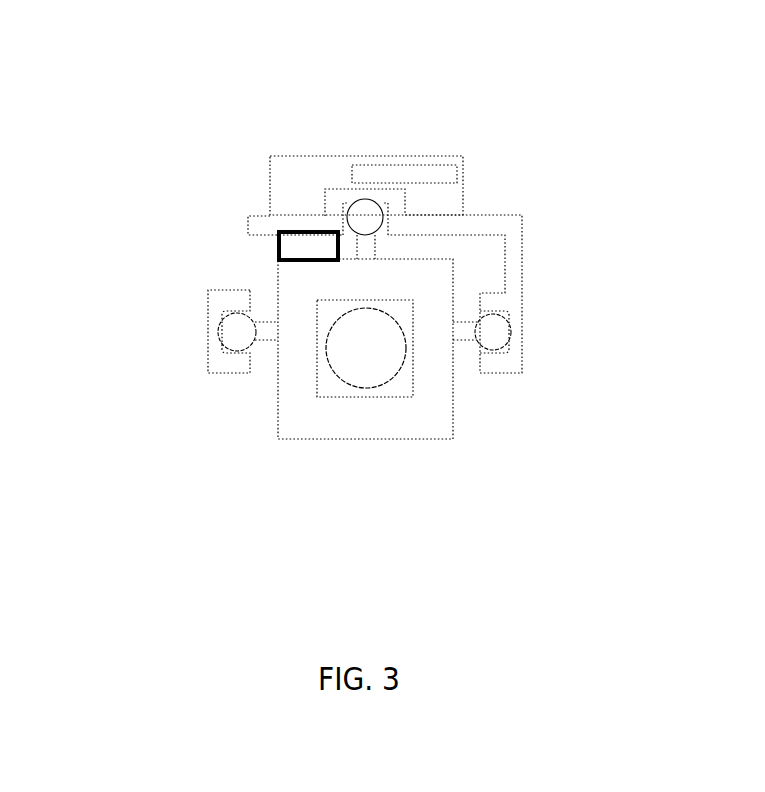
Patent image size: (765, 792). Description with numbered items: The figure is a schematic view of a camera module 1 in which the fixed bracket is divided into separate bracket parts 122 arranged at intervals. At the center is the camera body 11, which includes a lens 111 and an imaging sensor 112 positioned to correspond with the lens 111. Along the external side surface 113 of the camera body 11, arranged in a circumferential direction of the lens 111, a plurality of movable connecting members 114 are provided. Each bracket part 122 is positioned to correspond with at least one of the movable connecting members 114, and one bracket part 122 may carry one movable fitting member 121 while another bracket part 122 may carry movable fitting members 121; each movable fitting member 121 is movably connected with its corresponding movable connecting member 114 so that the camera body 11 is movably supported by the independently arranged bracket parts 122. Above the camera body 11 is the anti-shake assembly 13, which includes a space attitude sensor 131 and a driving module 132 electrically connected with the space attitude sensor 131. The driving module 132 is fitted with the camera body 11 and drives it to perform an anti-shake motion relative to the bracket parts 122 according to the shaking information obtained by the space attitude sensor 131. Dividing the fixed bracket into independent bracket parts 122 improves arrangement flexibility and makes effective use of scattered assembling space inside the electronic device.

The camera module 1 is at (202, 102).
The camera body 11 is at (298, 390).
The lens 111 is at (352, 362).
The imaging sensor 112 is at (337, 397).
The external side surface 113 is at (453, 312).
The movable connecting member 114 is at (388, 226).
The movable fitting member 121 is at (383, 204).
The bracket part 122 is at (505, 235).
The anti-shake assembly 13 is at (413, 139).
The space attitude sensor 131 is at (423, 165).
The driving module 132 is at (297, 250).